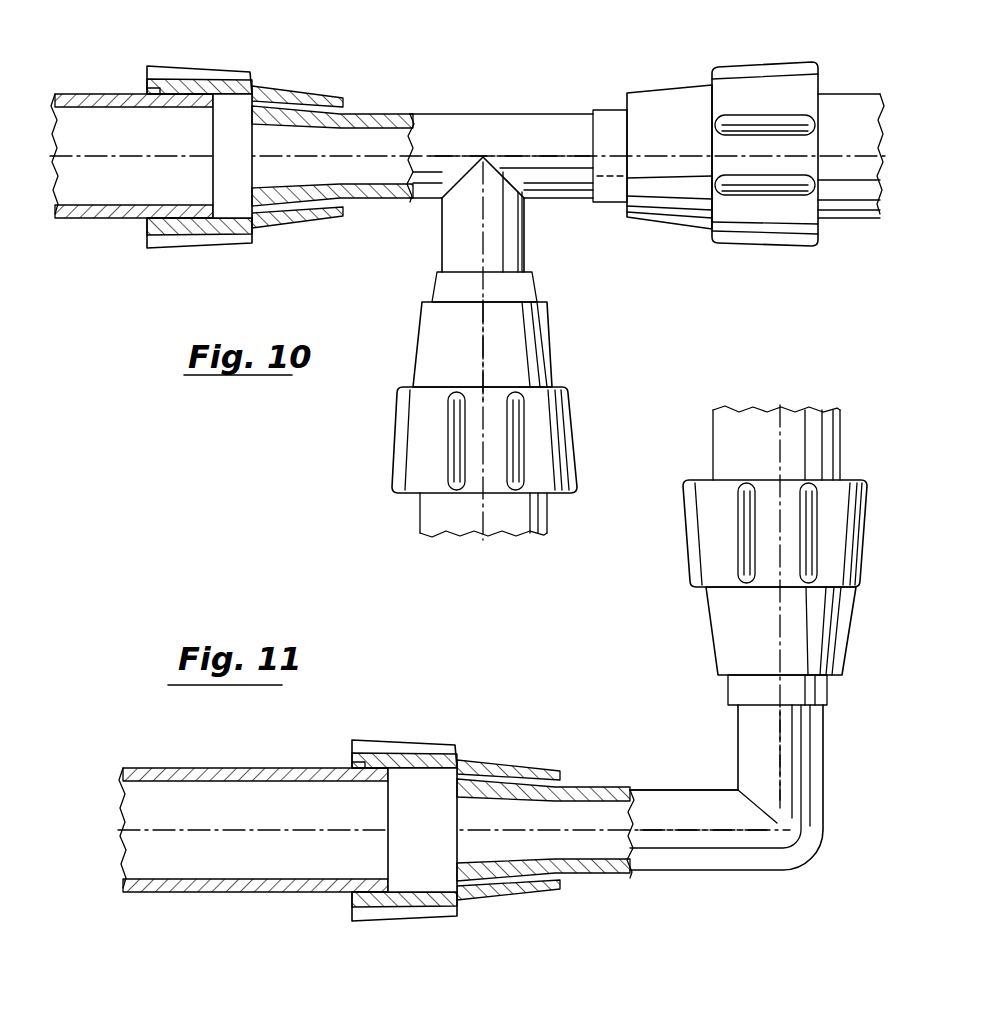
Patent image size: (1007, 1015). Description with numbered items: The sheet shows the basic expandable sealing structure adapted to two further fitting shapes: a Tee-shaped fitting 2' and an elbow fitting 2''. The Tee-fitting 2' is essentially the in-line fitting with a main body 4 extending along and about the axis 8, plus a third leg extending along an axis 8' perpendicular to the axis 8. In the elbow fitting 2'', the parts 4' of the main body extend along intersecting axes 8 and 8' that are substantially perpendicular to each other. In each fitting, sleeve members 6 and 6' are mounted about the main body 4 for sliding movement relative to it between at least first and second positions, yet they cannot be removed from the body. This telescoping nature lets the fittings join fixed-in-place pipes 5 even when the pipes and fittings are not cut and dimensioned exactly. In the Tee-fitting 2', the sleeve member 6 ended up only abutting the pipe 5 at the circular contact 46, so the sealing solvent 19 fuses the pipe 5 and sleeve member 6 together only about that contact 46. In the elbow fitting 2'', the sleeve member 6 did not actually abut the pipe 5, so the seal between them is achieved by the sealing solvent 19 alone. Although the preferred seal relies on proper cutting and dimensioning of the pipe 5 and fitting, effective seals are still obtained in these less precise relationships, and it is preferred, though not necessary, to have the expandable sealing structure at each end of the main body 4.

In FIG. 10, the Tee-shaped fitting 2' is at (501, 99).
In FIG. 11, the elbow fitting 2'' is at (607, 707).
In FIG. 10, the main body 4 is at (439, 172).
In FIG. 11, the parts of the main body 4' is at (642, 778).
In FIG. 10, the pipe 5 is at (95, 86).
In FIG. 11, the pipe 5 is at (257, 762).
In FIG. 10, the sleeve member 6 is at (245, 131).
In FIG. 11, the sleeve member 6 is at (456, 804).
In FIG. 10, the sleeve member 6' is at (569, 249).
In FIG. 11, the sleeve member 6' is at (737, 577).
In FIG. 10, the axis 8 is at (510, 134).
In FIG. 11, the axis 8 is at (705, 811).
In FIG. 10, the axis 8' is at (459, 350).
In FIG. 11, the axis 8' is at (763, 755).
In FIG. 10, the sealing solvent 19 is at (147, 91).
In FIG. 11, the sealing solvent 19 is at (348, 765).
In FIG. 10, the circular contact 46 is at (226, 93).